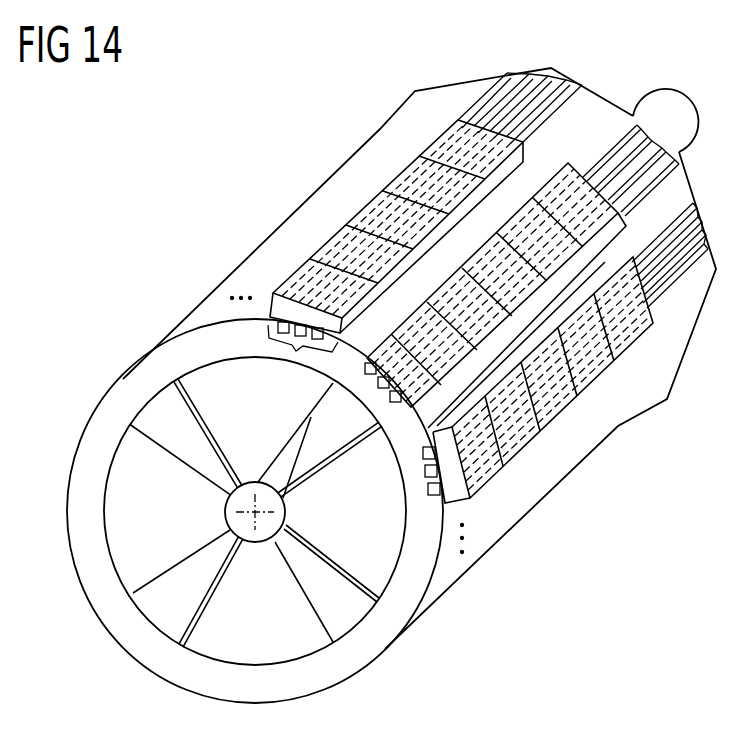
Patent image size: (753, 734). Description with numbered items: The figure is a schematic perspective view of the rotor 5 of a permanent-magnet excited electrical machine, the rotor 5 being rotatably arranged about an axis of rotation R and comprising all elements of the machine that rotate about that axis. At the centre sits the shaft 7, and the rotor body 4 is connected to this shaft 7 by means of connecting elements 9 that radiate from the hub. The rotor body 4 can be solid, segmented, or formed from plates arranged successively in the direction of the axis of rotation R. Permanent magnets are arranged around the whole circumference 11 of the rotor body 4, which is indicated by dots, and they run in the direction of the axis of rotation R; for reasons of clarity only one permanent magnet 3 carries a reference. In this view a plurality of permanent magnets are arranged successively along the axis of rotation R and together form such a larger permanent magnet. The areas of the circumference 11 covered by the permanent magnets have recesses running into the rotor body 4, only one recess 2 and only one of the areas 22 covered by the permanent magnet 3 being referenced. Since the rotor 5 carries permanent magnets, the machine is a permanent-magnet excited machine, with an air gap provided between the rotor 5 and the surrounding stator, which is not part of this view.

The recess 2 is at (395, 402).
The permanent magnet 3 is at (300, 290).
The rotor body 4 is at (403, 595).
The rotor 5 is at (553, 587).
The shaft 7 is at (285, 512).
The connecting elements 9 is at (160, 413).
The circumference 11 is at (557, 448).
The area covered by the permanent magnet 22 is at (296, 352).
The axis of rotation R is at (235, 514).